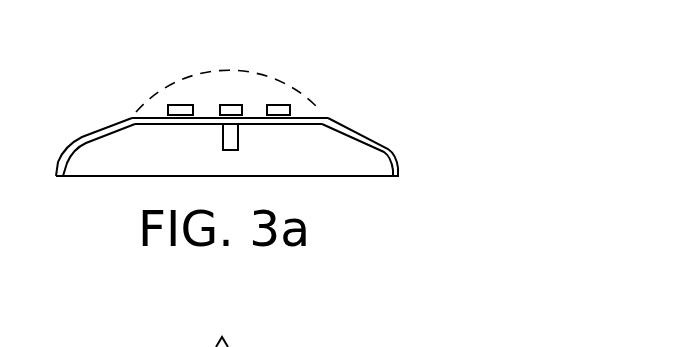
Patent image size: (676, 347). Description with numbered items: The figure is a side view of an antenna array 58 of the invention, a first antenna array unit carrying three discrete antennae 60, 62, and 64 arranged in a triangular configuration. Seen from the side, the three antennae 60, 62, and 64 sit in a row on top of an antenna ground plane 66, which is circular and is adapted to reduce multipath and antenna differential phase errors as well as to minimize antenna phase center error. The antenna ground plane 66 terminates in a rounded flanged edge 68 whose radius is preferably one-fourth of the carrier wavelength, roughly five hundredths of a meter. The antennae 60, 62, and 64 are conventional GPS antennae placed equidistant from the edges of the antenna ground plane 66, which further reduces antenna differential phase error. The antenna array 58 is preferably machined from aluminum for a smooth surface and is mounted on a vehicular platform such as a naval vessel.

The antenna array 58 is at (346, 63).
The discrete antenna 60 is at (177, 104).
The discrete antenna 62 is at (233, 106).
The discrete antenna 64 is at (282, 110).
The antenna ground plane 66 is at (320, 114).
The rounded flanged edge 68 is at (399, 174).